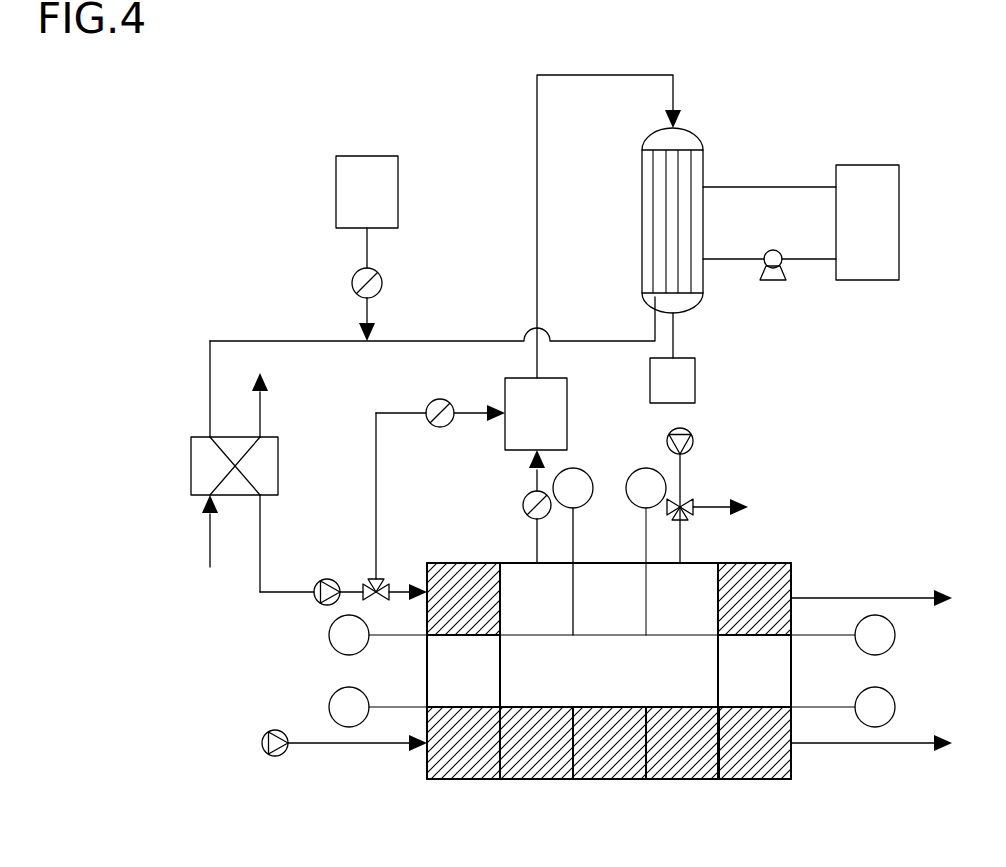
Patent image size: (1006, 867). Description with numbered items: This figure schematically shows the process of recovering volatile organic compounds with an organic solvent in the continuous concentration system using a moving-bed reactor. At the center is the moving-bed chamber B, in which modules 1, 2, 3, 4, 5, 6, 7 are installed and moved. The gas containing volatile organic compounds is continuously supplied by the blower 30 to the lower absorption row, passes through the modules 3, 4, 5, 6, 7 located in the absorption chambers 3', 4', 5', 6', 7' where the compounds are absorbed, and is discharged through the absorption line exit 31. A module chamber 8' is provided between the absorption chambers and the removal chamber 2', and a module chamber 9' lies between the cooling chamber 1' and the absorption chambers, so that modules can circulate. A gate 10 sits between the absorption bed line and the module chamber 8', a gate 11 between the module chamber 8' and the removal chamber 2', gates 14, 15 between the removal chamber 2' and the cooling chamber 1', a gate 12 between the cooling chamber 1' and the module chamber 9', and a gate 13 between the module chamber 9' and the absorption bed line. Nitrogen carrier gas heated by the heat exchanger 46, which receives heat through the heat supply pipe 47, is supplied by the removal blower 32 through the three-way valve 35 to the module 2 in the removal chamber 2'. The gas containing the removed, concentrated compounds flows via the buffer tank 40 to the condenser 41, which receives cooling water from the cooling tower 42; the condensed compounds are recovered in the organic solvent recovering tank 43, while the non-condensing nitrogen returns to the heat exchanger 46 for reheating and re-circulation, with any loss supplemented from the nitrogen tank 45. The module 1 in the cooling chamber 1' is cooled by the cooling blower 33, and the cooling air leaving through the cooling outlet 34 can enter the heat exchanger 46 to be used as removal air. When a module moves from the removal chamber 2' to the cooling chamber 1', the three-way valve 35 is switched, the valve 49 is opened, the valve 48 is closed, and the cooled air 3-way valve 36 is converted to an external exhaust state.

The module 1 is at (754, 599).
The module 2 is at (463, 599).
The module 3 is at (463, 743).
The module 4 is at (536, 743).
The module 5 is at (609, 743).
The module 6 is at (682, 743).
The module 7 is at (754, 743).
The cooling chamber 1' is at (754, 578).
The removal chamber 2' is at (463, 577).
The absorption chamber 3' is at (463, 767).
The absorption chamber 4' is at (536, 767).
The absorption chamber 5' is at (609, 767).
The absorption chamber 6' is at (682, 767).
The absorption chamber 7' is at (754, 767).
The module chamber 8' is at (443, 671).
The module chamber 9' is at (777, 671).
The moving-bed chamber B is at (602, 674).
The gate 10 is at (378, 707).
The gate 11 is at (378, 635).
The gate 12 is at (843, 635).
The gate 13 is at (843, 707).
The gate 14 is at (573, 551).
The gate 15 is at (646, 551).
The blower 30 is at (276, 730).
The absorption line exit 31 is at (886, 744).
The removal blower 32 is at (329, 579).
The cooling blower 33 is at (693, 440).
The cooling outlet 34 is at (886, 599).
The three-way valve 35 is at (381, 585).
The cooled air 3-way valve 36 is at (684, 501).
The buffer tank 40 is at (536, 414).
The condenser 41 is at (642, 212).
The cooling tower 42 is at (801, 222).
The organic solvent recovering tank 43 is at (672, 358).
The nitrogen tank 45 is at (367, 248).
The heat exchanger 46 is at (191, 462).
The heat supply pipe 47 is at (210, 545).
The valve 48 is at (524, 500).
The valve 49 is at (430, 404).